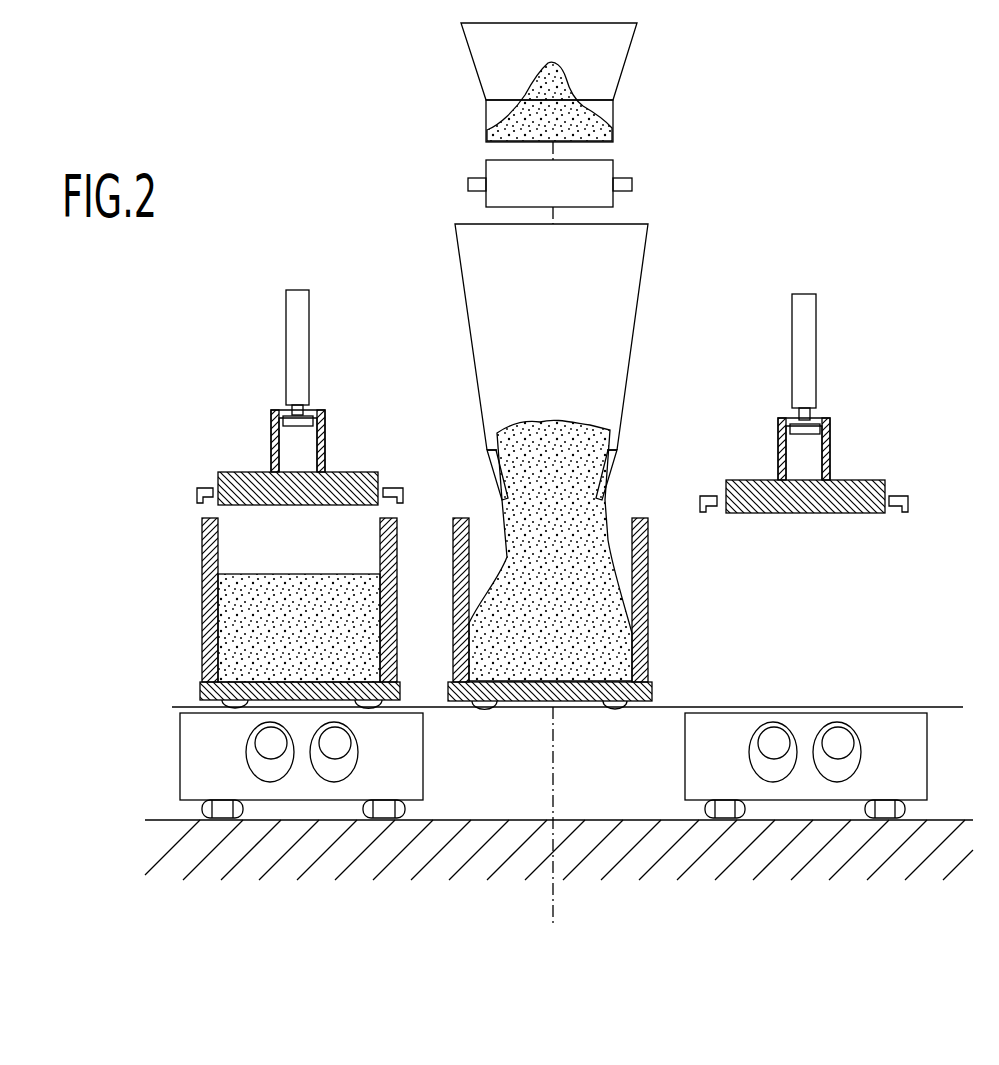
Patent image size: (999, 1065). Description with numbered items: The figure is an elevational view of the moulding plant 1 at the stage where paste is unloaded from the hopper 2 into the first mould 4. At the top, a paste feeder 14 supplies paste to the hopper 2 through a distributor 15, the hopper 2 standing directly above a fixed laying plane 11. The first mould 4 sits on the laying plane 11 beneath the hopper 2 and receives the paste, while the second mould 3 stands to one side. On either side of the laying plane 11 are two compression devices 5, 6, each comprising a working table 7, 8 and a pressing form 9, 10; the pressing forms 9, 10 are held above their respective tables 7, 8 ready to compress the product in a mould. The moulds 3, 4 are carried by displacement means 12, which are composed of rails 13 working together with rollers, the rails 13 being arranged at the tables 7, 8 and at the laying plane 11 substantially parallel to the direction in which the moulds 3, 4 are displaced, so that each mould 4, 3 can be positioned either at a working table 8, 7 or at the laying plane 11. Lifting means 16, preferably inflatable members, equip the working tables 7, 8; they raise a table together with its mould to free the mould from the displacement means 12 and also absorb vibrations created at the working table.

The apparatus 1 is at (343, 235).
The hopper 2 is at (643, 298).
The second mould 3 is at (203, 635).
The first mould 4 is at (648, 600).
The compression device 5 is at (250, 382).
The compression device 6 is at (840, 365).
The working table 7 is at (180, 782).
The working table 8 is at (930, 760).
The pressing form 9 is at (230, 472).
The pressing form 10 is at (870, 480).
The fixed laying plane 11 is at (567, 718).
The displacement means 12 is at (490, 710).
The rails 13 is at (643, 712).
The paste feeder 14 is at (630, 55).
The distributor 15 is at (632, 185).
The lifting means 16 is at (408, 812).